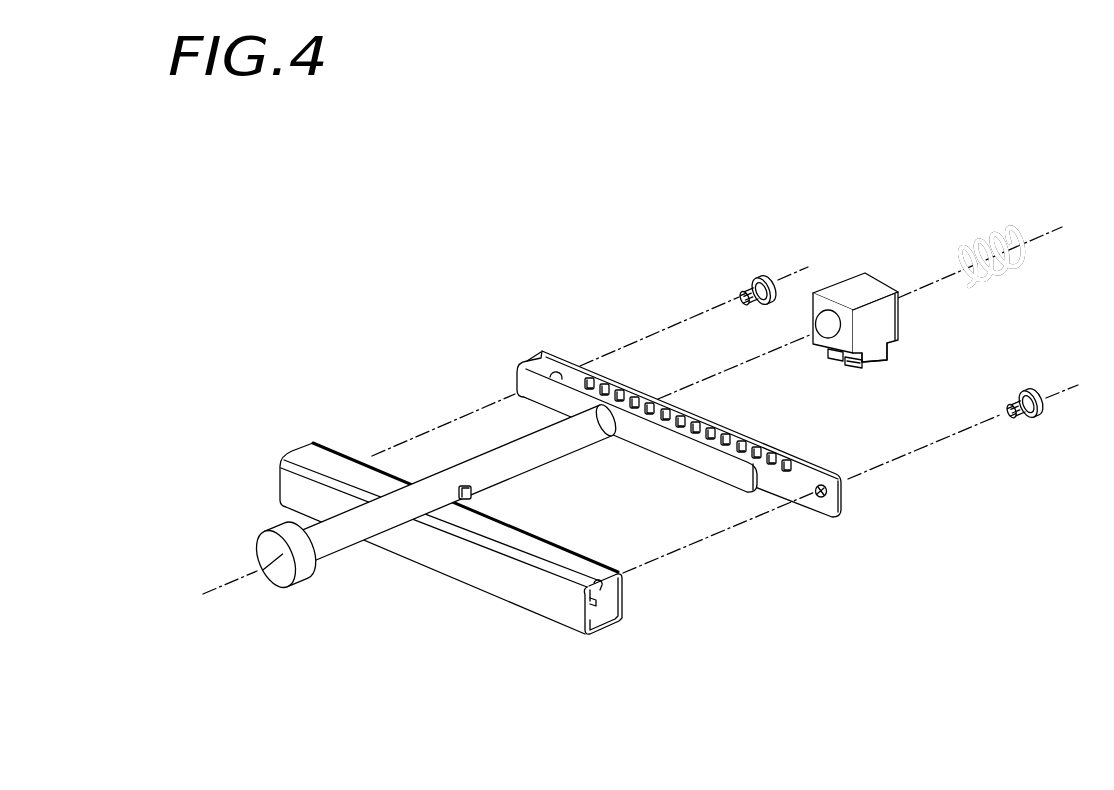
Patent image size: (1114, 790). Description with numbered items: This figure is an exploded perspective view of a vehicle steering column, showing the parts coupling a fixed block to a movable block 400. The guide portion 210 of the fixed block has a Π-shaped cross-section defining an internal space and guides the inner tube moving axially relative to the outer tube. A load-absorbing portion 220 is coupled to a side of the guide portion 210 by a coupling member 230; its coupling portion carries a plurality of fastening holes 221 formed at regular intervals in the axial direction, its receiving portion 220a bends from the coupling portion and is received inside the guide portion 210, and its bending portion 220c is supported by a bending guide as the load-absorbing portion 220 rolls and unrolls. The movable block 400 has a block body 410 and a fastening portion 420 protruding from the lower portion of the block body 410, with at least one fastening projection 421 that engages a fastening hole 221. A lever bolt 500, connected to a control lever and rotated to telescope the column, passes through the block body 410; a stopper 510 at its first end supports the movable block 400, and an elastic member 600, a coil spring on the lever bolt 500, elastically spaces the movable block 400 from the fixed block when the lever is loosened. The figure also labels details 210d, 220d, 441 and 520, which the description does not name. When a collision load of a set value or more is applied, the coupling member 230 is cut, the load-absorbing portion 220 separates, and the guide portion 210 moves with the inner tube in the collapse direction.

The guide portion 210 is at (318, 452).
The locking groove of channel 210d is at (589, 604).
The load-absorbing portion 220 is at (704, 452).
The receiving portion 220a is at (723, 472).
The bending portion 220c is at (524, 360).
The rail fastening hole 220d is at (813, 528).
The fastening holes 221 is at (778, 458).
The coupling member 230 is at (755, 275).
The movable block 400 is at (910, 299).
The block body 410 is at (877, 315).
The fastening portion 420 is at (882, 350).
The fastening projection 421 is at (848, 368).
The shaft hole 441 is at (831, 326).
The lever bolt 500 is at (397, 495).
The stopper 510 is at (267, 547).
The stopper 520 is at (462, 486).
The elastic member 600 is at (987, 223).